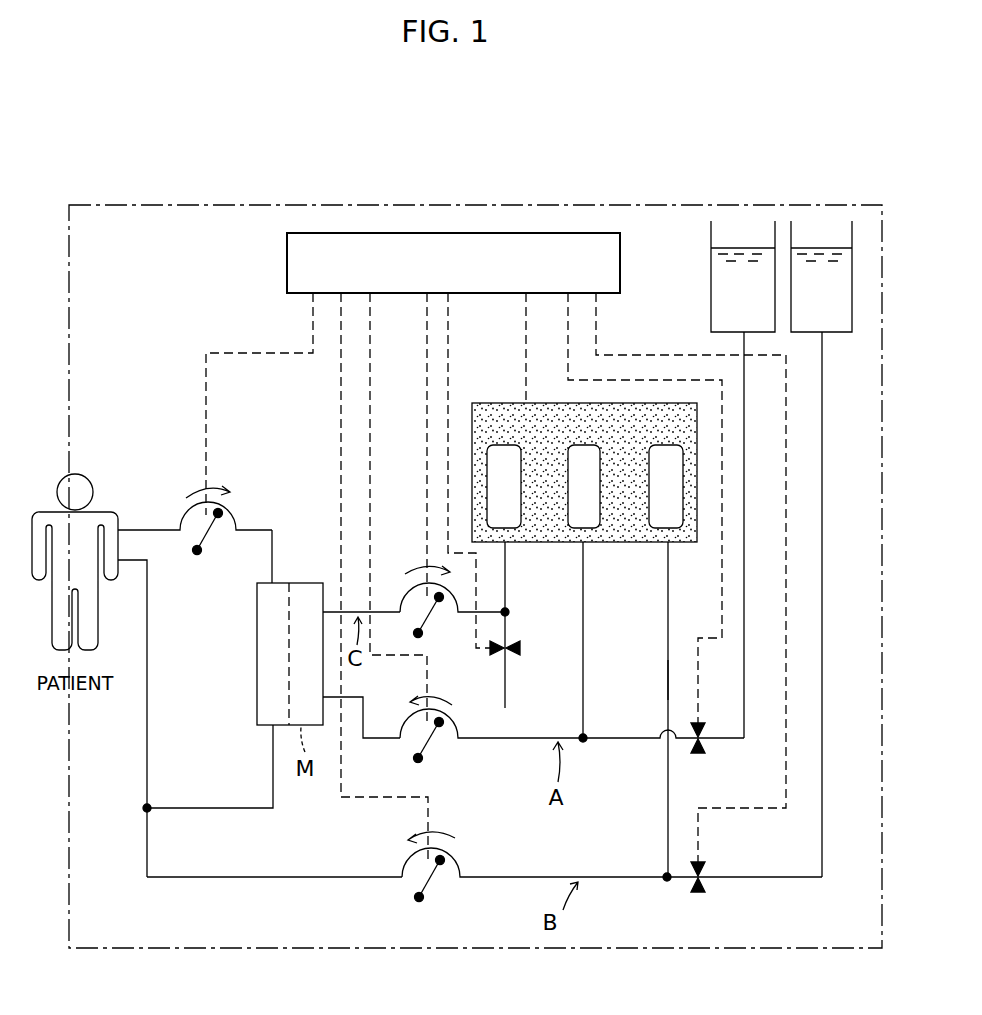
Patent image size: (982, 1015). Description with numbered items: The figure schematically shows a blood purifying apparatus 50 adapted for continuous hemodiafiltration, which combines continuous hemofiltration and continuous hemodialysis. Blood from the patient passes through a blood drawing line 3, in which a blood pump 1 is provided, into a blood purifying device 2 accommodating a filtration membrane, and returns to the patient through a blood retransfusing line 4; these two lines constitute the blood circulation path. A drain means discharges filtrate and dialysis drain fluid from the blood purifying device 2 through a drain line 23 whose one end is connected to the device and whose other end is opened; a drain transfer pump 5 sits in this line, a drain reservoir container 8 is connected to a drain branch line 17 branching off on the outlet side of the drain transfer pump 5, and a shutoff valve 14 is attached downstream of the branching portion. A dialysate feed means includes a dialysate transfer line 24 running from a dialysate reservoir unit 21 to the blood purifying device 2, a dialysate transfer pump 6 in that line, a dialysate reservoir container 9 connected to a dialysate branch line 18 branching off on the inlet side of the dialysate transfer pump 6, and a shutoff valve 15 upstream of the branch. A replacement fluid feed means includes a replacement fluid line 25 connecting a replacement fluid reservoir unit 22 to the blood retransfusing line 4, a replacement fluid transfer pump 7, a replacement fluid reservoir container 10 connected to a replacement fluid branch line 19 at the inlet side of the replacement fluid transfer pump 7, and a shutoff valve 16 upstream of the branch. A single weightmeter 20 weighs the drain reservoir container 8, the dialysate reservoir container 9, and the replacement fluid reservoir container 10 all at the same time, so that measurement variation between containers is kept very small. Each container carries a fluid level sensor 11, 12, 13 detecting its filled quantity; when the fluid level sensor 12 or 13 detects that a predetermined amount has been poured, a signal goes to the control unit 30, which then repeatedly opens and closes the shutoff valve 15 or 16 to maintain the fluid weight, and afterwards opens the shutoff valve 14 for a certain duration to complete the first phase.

The blood pump 1 is at (180, 520).
The blood purifying device 2 is at (257, 655).
The blood drawing line 3 is at (273, 540).
The blood retransfusing line 4 is at (208, 806).
The drain transfer pump 5 is at (410, 578).
The dialysate transfer pump 6 is at (452, 742).
The replacement fluid transfer pump 7 is at (400, 865).
The drain reservoir container 8 is at (512, 540).
The dialysate reservoir container 9 is at (590, 540).
The replacement fluid reservoir container 10 is at (672, 540).
The fluid level sensor 11 is at (524, 453).
The fluid level sensor 12 is at (604, 453).
The fluid level sensor 13 is at (686, 453).
The shutoff valve 14 is at (521, 648).
The shutoff valve 15 is at (700, 752).
The shutoff valve 16 is at (700, 893).
The drain branch line 17 is at (508, 596).
The dialysate branch line 18 is at (585, 660).
The replacement fluid branch line 19 is at (669, 660).
The weightmeter 20 is at (497, 403).
The dialysate reservoir unit 21 is at (711, 273).
The replacement fluid reservoir unit 22 is at (843, 332).
The drain line 23 is at (341, 598).
The dialysate transfer line 24 is at (365, 715).
The replacement fluid line 25 is at (145, 880).
The control unit 30 is at (287, 268).
The blood purifying apparatus 50 is at (441, 950).